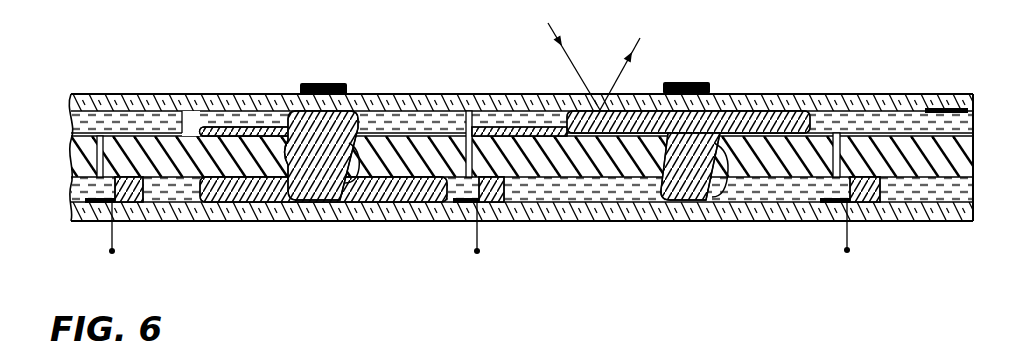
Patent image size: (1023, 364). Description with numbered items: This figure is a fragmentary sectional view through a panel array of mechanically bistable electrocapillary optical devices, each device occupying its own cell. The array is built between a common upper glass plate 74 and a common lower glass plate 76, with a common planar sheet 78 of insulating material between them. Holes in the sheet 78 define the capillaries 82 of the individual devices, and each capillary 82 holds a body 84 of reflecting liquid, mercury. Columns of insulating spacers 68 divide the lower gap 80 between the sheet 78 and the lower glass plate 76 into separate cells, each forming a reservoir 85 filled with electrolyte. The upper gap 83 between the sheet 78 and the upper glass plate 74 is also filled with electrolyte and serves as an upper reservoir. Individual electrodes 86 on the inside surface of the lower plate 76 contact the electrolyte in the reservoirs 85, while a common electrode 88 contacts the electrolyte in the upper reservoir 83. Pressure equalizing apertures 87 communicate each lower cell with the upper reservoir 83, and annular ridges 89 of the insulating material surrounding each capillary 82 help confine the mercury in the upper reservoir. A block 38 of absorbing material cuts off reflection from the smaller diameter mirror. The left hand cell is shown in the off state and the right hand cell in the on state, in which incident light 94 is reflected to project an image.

The block of absorbing material 38 is at (320, 83).
The insulating spacers 68 is at (143, 193).
The upper glass plate 74 is at (380, 95).
The lower glass plate 76 is at (403, 220).
The sheet of insulating material 78 is at (78, 156).
The lower gap 80 is at (73, 187).
The capillary 82 is at (352, 170).
The upper gap 83 is at (70, 118).
The body of reflecting liquid 84 is at (300, 190).
The reservoir 85 is at (190, 198).
The individual electrodes 86 is at (100, 198).
The pressure equalizing apertures 87 is at (470, 130).
The common electrode 88 is at (943, 107).
The annular ridges 89 is at (187, 133).
The light 94 is at (578, 68).